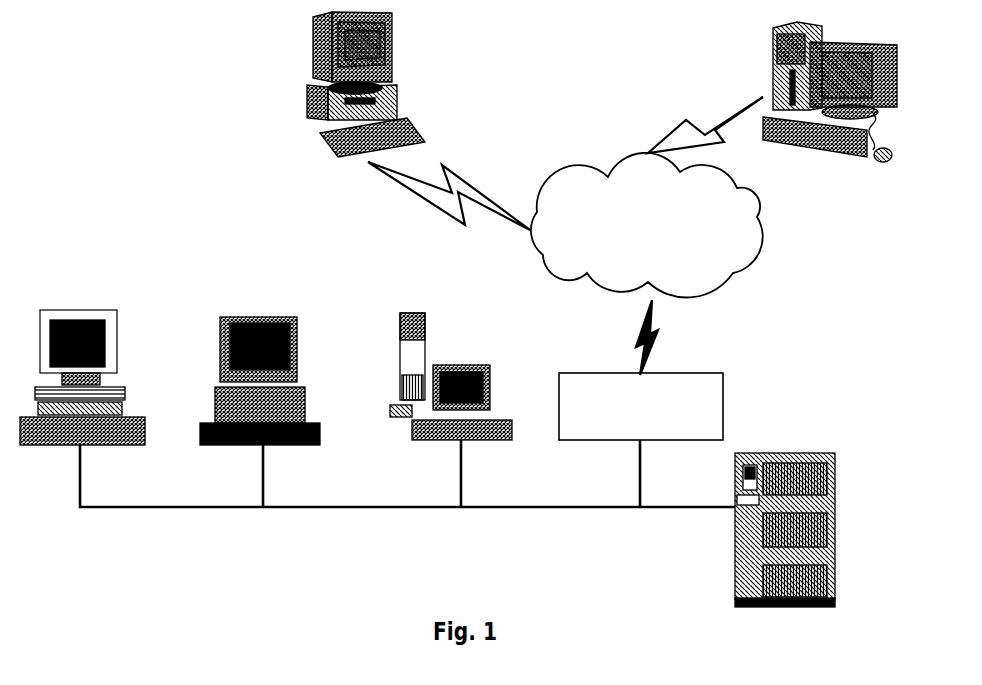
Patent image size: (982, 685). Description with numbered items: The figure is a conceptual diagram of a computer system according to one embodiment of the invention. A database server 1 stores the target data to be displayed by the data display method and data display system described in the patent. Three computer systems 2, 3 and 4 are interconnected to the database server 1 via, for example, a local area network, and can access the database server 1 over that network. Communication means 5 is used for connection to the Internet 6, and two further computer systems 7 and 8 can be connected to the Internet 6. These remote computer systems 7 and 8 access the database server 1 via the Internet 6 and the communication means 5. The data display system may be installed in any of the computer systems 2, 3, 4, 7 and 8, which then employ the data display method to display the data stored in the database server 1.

The database server 1 is at (820, 465).
The computer system 2 is at (75, 316).
The computer system 3 is at (258, 318).
The computer system 4 is at (423, 328).
The communication means 5 is at (715, 380).
The Internet 6 is at (580, 178).
The computer system 7 is at (395, 38).
The computer system 8 is at (777, 52).